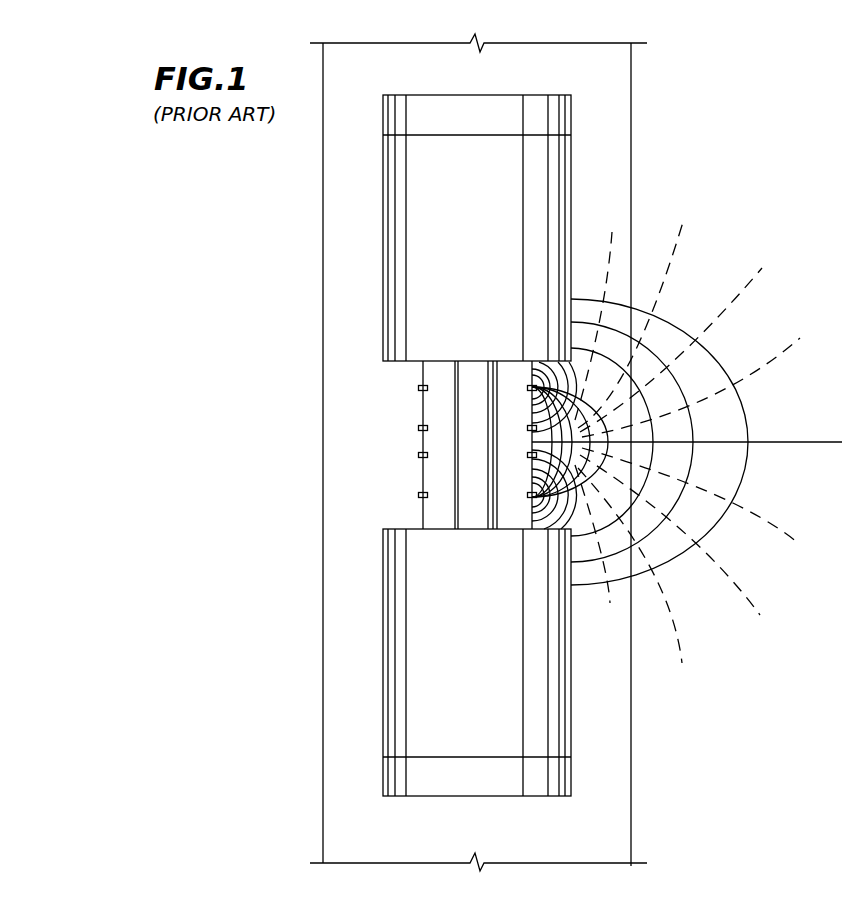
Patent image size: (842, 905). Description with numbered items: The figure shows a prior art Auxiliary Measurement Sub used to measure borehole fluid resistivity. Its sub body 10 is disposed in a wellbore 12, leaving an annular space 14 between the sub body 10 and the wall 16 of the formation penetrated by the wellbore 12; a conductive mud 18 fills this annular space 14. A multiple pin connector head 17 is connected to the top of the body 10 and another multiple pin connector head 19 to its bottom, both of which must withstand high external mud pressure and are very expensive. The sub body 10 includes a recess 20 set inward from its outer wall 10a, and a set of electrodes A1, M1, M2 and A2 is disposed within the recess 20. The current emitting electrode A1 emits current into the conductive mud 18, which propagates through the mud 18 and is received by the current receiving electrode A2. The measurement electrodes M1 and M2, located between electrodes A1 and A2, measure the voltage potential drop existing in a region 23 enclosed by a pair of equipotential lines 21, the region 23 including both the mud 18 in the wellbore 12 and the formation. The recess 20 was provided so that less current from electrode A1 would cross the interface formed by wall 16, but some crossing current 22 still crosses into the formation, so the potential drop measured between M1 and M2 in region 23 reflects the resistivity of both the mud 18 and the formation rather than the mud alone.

The sub body 10 is at (382, 348).
The outer wall of the sub body 10a is at (572, 157).
The wellbore 12 is at (633, 233).
The annular space 14 is at (335, 348).
The wall of the formation 16 is at (636, 60).
The multiple pin connector head 17 is at (420, 94).
The conductive mud 18 is at (610, 732).
The multiple pin connector head 19 is at (532, 797).
The recess 20 is at (398, 362).
The equipotential lines 21 is at (678, 250).
The crossing current 22 is at (647, 421).
The region 23 is at (808, 416).
The current emitting electrode A1 is at (463, 395).
The current receiving electrode A2 is at (463, 501).
The measurement electrode M1 is at (462, 435).
The measurement electrode M2 is at (462, 463).